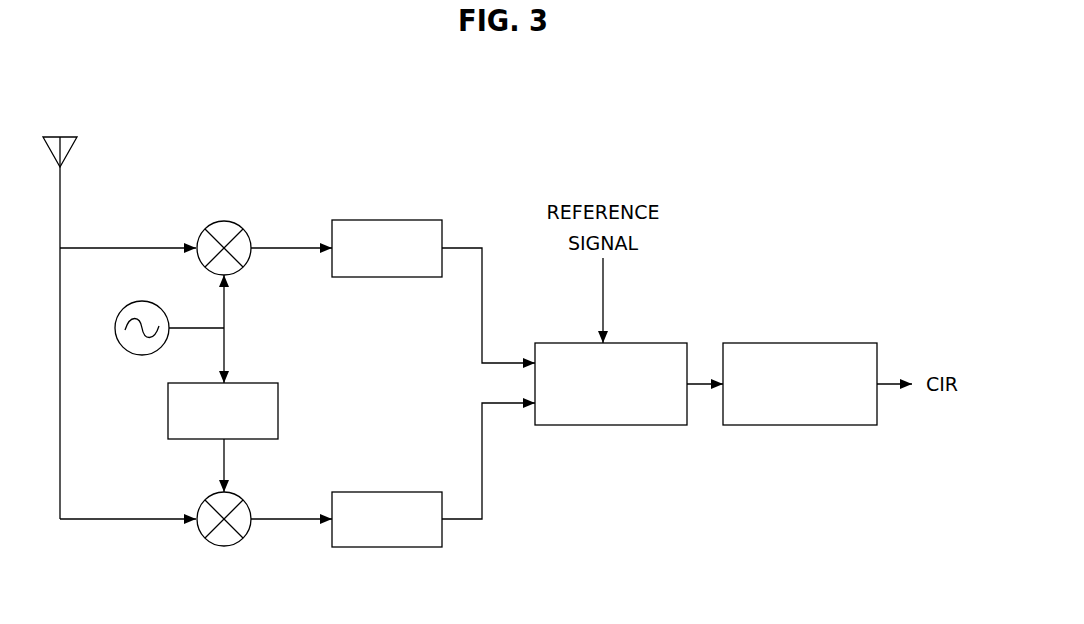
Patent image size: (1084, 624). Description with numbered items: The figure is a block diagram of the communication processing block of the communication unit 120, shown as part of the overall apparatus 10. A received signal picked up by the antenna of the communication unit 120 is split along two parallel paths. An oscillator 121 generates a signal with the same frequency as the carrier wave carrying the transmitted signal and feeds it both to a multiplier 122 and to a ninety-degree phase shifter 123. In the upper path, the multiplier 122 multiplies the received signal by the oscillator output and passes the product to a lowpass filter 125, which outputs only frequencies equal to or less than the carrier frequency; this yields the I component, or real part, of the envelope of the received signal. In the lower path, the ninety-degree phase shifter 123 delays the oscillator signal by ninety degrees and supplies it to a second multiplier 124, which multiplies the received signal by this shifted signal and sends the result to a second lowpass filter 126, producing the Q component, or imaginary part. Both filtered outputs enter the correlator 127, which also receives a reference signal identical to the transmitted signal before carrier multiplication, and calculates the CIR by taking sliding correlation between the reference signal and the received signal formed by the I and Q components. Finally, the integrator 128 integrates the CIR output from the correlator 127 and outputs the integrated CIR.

The receiver / channel estimation apparatus 10 is at (806, 138).
The communication unit 120 is at (68, 136).
The oscillator 121 is at (139, 301).
The multiplier 122 is at (242, 222).
The 90° phase shifter 123 is at (258, 383).
The multiplier 124 is at (242, 492).
The lowpass filter (LPF) 125 is at (417, 220).
The LPF 126 is at (417, 492).
The correlator 127 is at (648, 343).
The integrator 128 is at (853, 343).